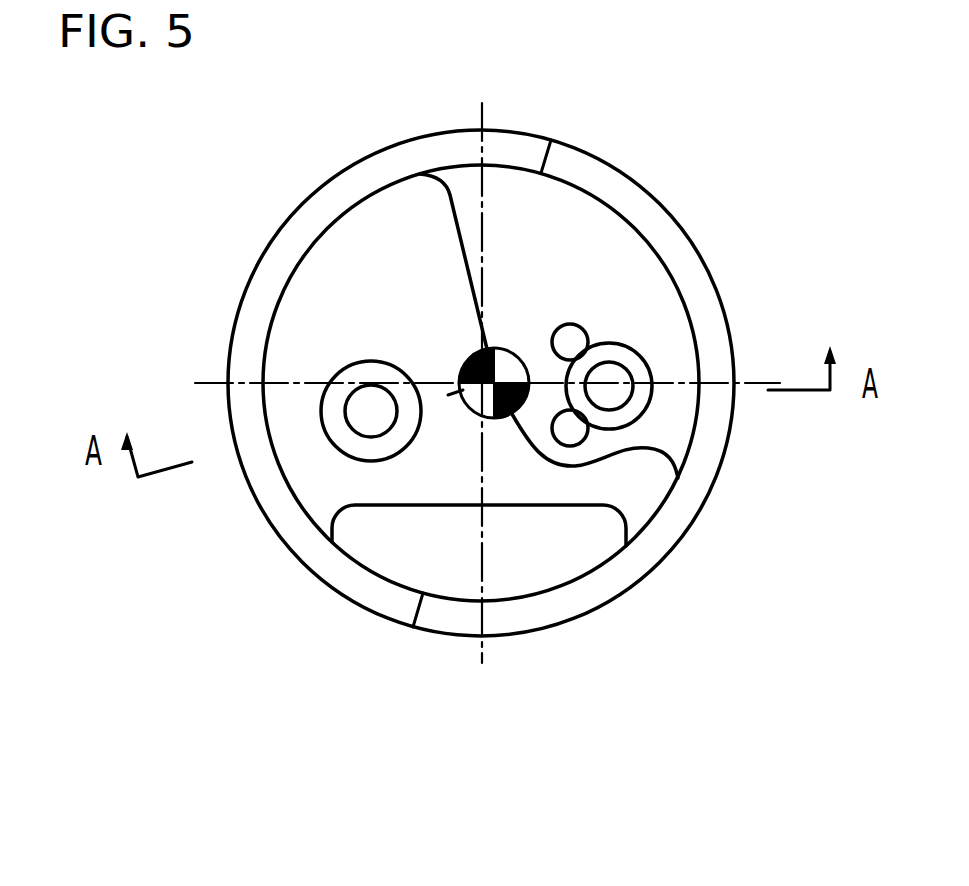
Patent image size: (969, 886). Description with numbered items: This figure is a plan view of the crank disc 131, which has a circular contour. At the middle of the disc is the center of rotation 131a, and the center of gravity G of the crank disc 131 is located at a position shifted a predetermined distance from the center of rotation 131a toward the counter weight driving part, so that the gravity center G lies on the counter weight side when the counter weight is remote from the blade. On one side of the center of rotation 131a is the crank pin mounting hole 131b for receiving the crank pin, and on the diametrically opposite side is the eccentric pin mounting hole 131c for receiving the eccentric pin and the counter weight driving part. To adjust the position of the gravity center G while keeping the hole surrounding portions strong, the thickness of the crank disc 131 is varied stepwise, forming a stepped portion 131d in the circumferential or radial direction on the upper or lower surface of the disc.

The crank disc 131 is at (689, 249).
The center of rotation 131a is at (490, 418).
The crank pin mounting hole 131b is at (362, 422).
The eccentric pin mounting hole 131c is at (617, 397).
The stepped portion 131d is at (340, 267).
The center of gravity G is at (513, 352).